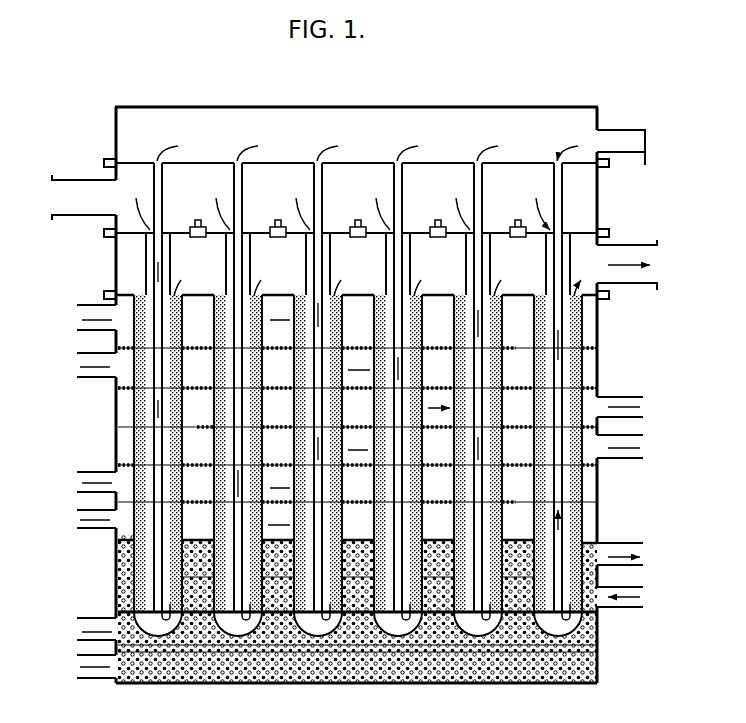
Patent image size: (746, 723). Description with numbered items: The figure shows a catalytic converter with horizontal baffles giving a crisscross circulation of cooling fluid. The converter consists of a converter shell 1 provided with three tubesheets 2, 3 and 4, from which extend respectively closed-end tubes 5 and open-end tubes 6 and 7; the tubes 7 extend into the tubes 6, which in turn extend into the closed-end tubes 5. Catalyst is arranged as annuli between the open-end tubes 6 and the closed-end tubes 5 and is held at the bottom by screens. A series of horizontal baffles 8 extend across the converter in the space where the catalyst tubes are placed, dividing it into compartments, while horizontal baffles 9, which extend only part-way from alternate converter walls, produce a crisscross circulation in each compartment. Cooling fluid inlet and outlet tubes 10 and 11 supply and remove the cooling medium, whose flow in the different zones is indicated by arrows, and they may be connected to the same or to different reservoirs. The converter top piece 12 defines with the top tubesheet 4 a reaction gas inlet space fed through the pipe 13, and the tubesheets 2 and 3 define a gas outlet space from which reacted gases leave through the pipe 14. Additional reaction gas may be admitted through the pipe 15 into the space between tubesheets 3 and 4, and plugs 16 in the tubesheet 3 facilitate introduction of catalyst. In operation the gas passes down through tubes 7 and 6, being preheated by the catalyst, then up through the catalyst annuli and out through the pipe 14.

The converter shell 1 is at (598, 360).
The tubesheet 2 is at (587, 298).
The tubesheet 3 is at (589, 233).
The tubesheet 4 is at (586, 166).
The closed-end tubes 5 is at (583, 378).
The open-end tubes 6 is at (586, 487).
The open-end tubes 7 is at (564, 509).
The horizontal baffles 8 is at (599, 541).
The horizontal baffles 9 is at (598, 567).
The cooling fluid inlet tubes 10 is at (82, 530).
The cooling fluid outlet tubes 11 is at (80, 492).
The converter top piece 12 is at (586, 107).
The pipe 13 is at (637, 130).
The pipe 14 is at (645, 286).
The pipe 15 is at (62, 216).
The plugs 16 is at (197, 220).